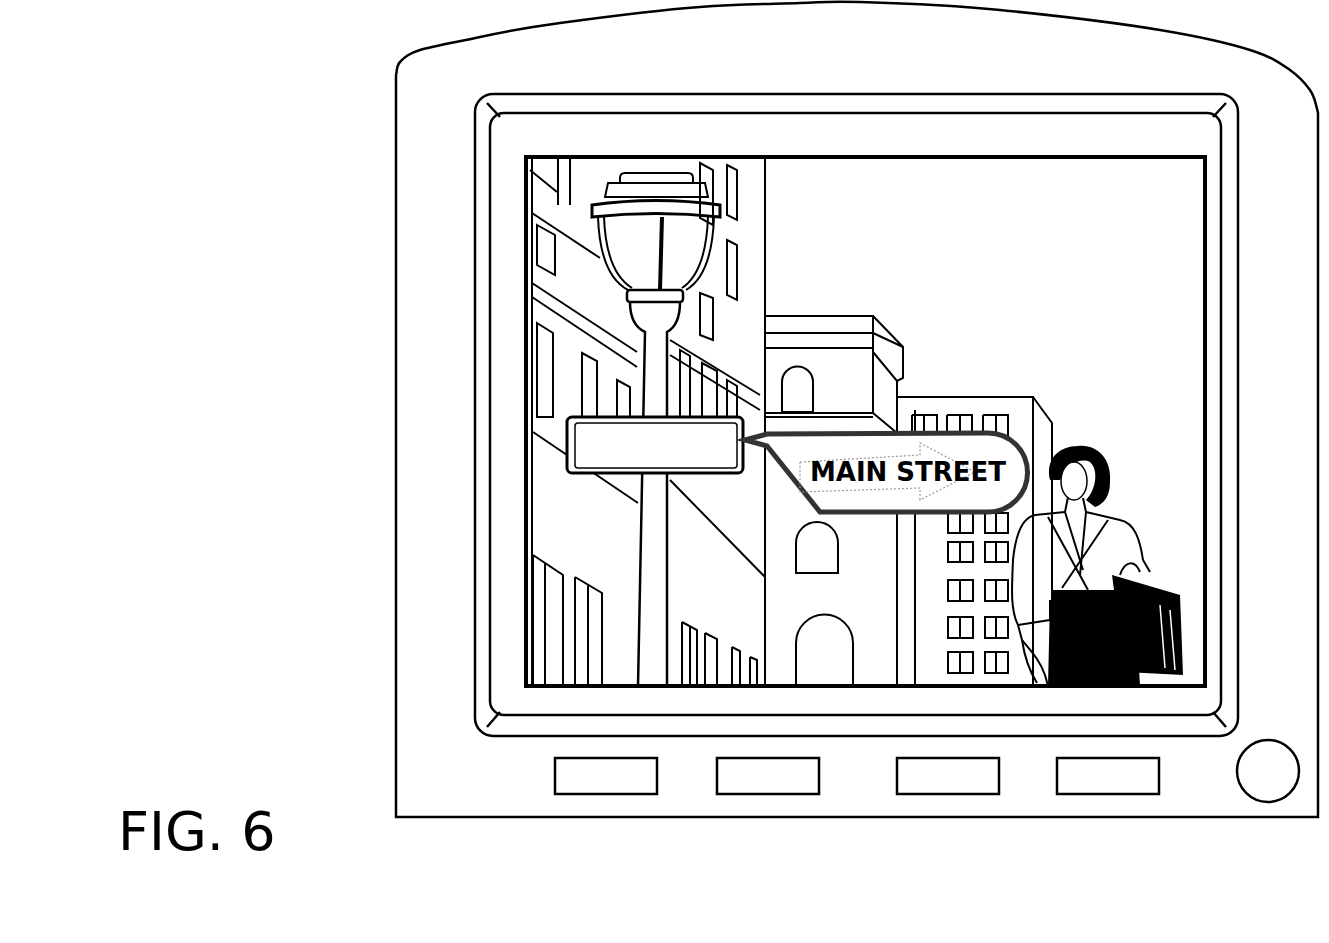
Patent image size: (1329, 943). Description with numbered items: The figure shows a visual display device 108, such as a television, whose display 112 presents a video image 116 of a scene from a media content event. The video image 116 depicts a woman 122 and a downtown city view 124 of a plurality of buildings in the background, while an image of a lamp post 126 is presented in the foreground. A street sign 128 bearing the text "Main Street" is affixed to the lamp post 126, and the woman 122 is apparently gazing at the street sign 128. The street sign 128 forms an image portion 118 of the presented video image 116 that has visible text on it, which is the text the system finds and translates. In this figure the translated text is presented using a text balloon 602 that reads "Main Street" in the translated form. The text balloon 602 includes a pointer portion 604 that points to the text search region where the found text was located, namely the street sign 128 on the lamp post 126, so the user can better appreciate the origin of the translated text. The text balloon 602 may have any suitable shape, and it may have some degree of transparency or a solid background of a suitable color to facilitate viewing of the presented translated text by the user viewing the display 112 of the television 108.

The visual display device 108 is at (398, 314).
The display 112 is at (1218, 415).
The presented video image 116 is at (993, 203).
The image portion 118 is at (742, 392).
The woman 122 is at (1090, 440).
The downtown city view 124 is at (1015, 293).
The lamp post 126 is at (667, 560).
The street sign 128 is at (583, 445).
The text balloon 602 is at (868, 510).
The pointer portion 604 is at (793, 412).